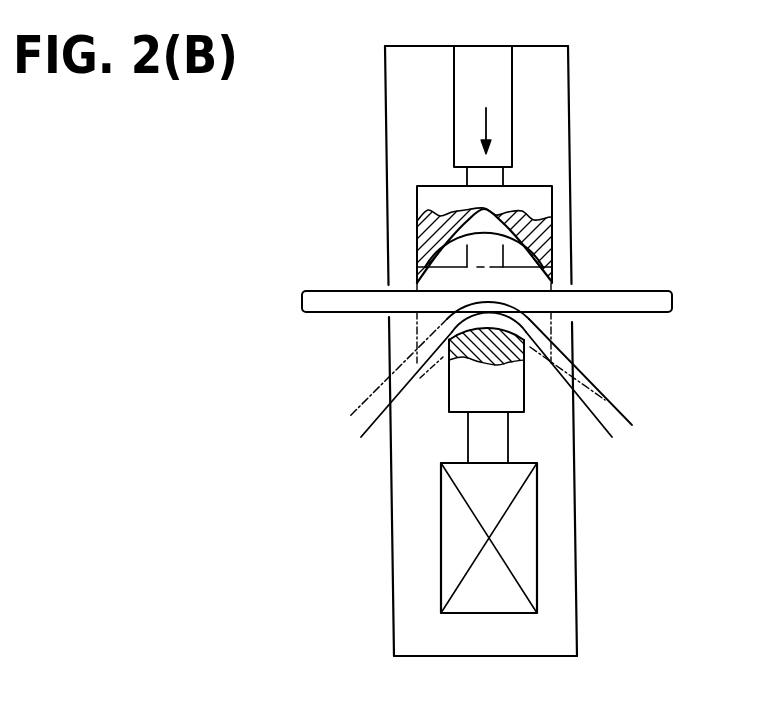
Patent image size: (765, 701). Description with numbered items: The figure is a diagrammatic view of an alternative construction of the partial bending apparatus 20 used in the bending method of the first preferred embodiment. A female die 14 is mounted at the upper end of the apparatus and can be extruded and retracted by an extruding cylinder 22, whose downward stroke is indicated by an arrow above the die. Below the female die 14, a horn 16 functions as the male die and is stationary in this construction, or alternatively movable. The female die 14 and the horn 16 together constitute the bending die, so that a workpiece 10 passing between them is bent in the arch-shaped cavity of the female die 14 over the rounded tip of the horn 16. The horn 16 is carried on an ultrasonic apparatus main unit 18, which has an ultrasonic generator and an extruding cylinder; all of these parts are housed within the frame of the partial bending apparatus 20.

The metal strip (workpiece) 10 is at (334, 276).
The female die 14 is at (538, 205).
The horn 16 is at (510, 398).
The ultrasonic apparatus main unit 18 is at (527, 545).
The partial bending apparatus 20 is at (640, 175).
The extruding cylinder 22 is at (502, 102).